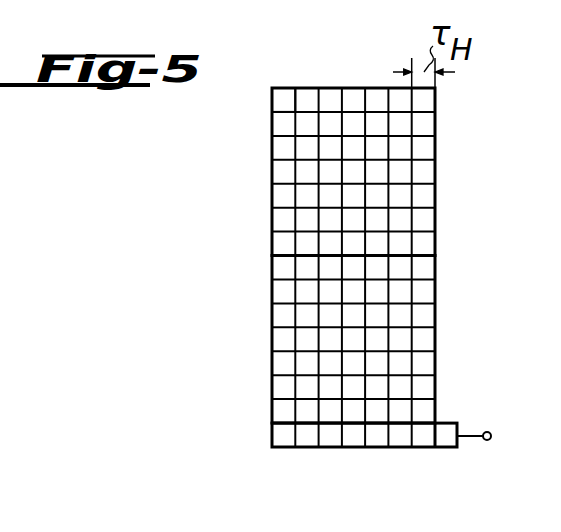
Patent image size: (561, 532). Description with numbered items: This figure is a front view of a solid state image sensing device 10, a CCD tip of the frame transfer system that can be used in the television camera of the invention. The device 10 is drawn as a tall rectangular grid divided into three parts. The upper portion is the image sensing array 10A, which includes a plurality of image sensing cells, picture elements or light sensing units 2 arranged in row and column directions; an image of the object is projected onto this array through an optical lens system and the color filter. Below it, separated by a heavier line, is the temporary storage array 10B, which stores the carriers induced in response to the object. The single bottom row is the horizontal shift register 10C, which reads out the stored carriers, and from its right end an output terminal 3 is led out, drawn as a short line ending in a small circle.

The solid state image sensing device 10 is at (331, 256).
The image sensing array 10A is at (272, 214).
The temporary storage array 10B is at (272, 366).
The horizontal shift register 10C is at (398, 447).
The light sensing unit 2 is at (310, 104).
The output terminal 3 is at (487, 440).